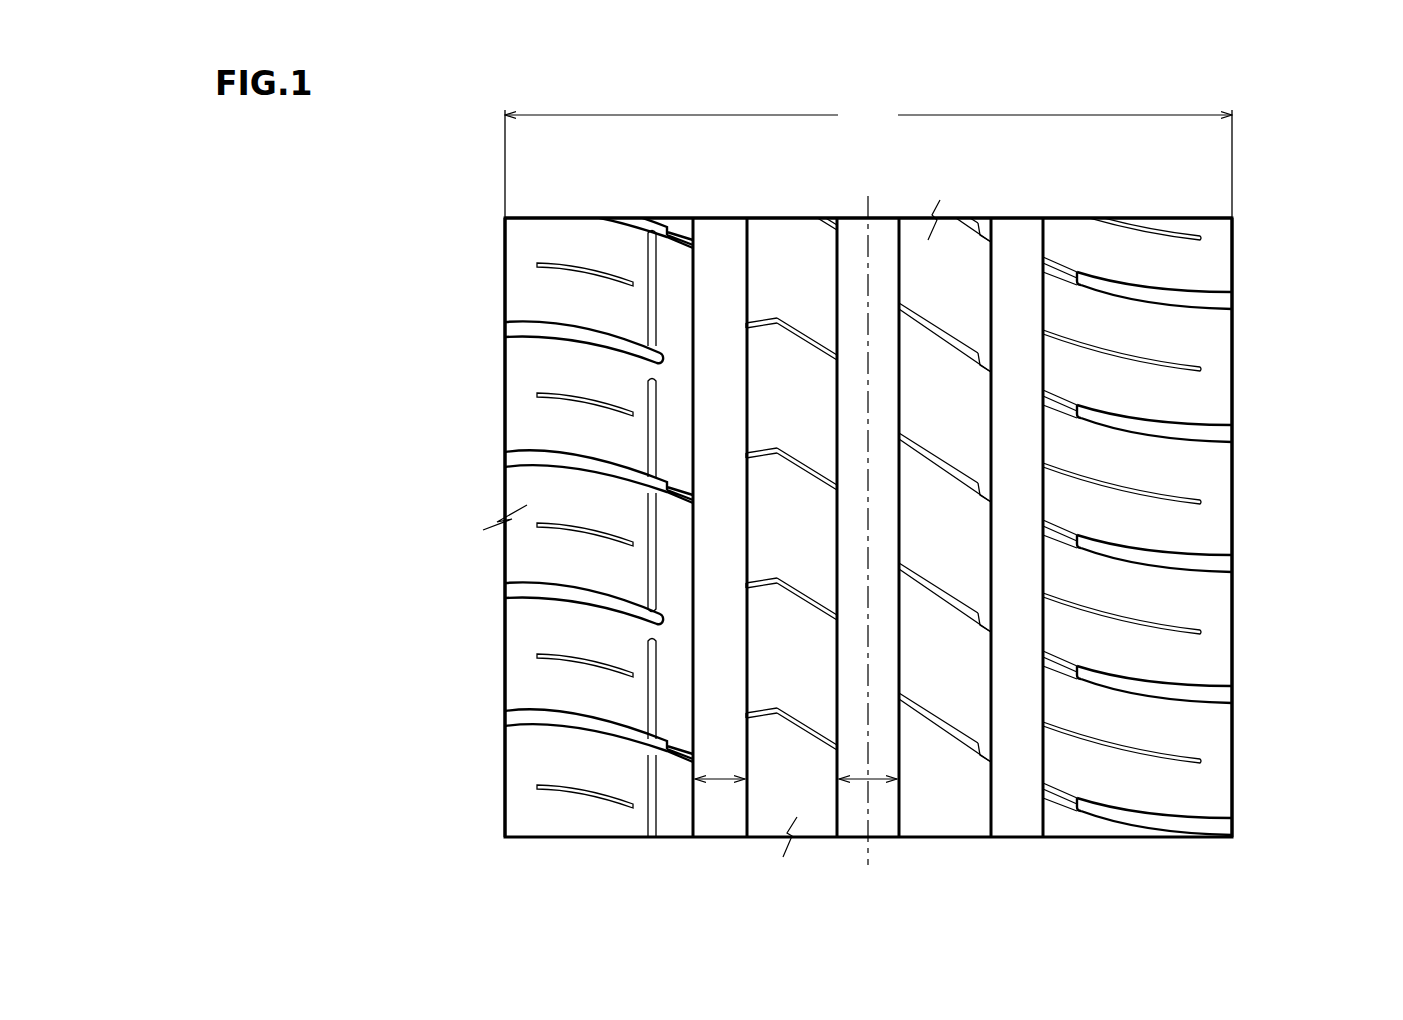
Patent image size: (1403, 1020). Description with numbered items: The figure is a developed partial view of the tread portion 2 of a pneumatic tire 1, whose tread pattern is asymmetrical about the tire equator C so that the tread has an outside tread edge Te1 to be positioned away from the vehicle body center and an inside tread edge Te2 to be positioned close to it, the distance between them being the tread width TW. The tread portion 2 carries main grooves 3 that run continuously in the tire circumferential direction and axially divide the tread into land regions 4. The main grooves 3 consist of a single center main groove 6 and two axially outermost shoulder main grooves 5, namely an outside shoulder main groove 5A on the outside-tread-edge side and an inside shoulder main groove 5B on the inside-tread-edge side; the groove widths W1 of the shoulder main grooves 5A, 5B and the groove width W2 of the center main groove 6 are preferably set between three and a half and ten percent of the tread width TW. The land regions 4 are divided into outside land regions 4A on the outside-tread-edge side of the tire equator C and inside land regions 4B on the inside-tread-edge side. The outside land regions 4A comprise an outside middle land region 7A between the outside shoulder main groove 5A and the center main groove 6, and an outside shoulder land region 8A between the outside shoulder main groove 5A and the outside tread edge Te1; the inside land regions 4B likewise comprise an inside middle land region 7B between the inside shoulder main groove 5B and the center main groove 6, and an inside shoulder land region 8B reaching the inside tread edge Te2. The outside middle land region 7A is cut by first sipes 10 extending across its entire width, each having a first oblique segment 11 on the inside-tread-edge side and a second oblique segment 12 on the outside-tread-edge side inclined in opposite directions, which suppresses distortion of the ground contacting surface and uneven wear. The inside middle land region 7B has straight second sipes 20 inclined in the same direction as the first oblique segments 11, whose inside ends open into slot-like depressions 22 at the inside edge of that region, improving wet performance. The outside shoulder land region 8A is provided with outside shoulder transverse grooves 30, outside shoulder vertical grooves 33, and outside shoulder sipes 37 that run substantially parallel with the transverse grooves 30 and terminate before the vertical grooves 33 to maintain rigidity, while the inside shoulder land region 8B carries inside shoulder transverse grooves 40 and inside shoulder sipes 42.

The pneumatic tire 1 is at (1170, 212).
The tread portion 2 is at (888, 212).
The main grooves 3 is at (702, 903).
The land regions 4 is at (841, 479).
The outside land regions 4A is at (603, 172).
The inside land regions 4B is at (1133, 172).
The shoulder main groove 5 is at (868, 562).
The outside shoulder main groove 5A is at (723, 815).
The inside shoulder main groove 5B is at (1015, 792).
The center main groove 6 is at (853, 805).
The outside middle land region 7A is at (785, 275).
The inside middle land region 7B is at (953, 272).
The outside shoulder land region 8A is at (600, 257).
The inside shoulder land region 8B is at (1137, 260).
The first sipes 10 is at (402, 357).
The first oblique segment 11 is at (820, 477).
The second oblique segment 12 is at (762, 455).
The second sipes 20 is at (943, 460).
The slot-like depressions 22 is at (990, 485).
The outside shoulder transverse grooves 30 is at (573, 332).
The outside shoulder vertical grooves 33 is at (650, 525).
The outside shoulder sipes 37 is at (580, 652).
The inside shoulder transverse grooves 40 is at (1180, 303).
The inside shoulder sipes 42 is at (1213, 493).
The tire equator C is at (868, 517).
The tread width TW is at (868, 160).
The outside tread edge Te1 is at (505, 270).
The inside tread edge Te2 is at (1232, 270).
The groove width of shoulder main grooves W1 is at (720, 782).
The groove width of center main groove W2 is at (877, 780).